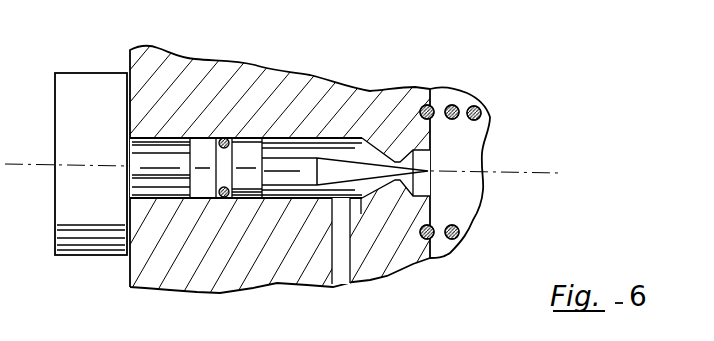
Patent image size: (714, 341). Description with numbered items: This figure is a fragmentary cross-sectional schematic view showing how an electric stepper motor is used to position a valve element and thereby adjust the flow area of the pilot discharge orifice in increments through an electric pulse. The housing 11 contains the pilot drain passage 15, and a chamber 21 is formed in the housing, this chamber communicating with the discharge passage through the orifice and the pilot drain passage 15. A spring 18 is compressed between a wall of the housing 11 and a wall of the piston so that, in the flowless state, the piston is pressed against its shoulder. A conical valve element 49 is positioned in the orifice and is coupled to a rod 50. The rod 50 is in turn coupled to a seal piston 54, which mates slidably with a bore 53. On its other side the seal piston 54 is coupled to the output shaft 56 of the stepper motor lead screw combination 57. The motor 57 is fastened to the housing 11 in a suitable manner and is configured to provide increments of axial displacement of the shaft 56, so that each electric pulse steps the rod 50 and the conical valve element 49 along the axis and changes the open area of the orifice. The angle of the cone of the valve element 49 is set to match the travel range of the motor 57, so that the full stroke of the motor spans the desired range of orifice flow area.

The housing 11 is at (262, 73).
The pilot drain passage 15 is at (343, 270).
The spring 18 is at (456, 107).
The chamber 21 is at (464, 160).
The conical valve element 49 is at (346, 153).
The rod 50 is at (298, 156).
The bore 53 is at (288, 198).
The seal piston 54 is at (245, 180).
The output shaft 56 is at (153, 178).
The stepper motor lead screw combination 57 is at (83, 257).